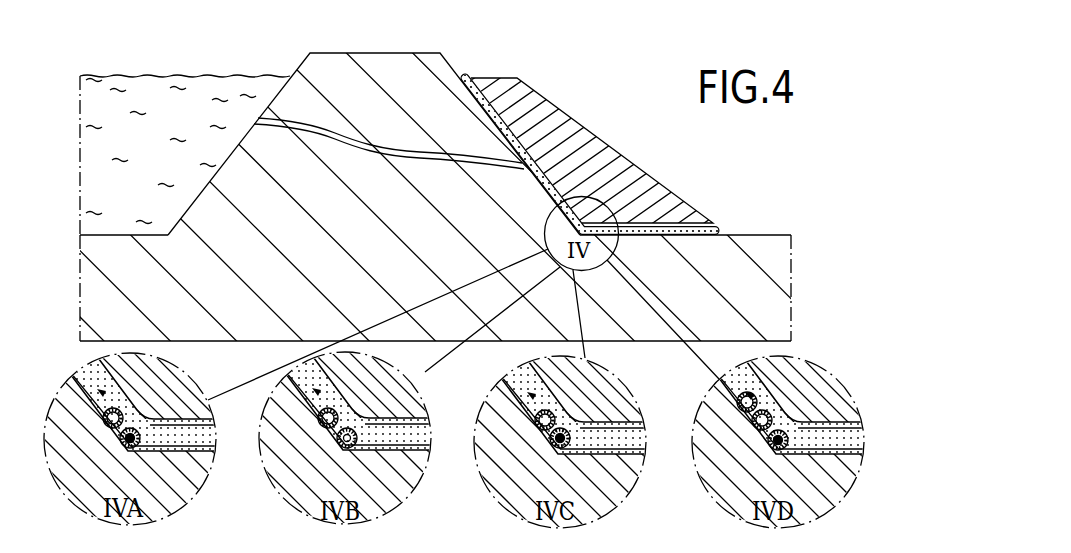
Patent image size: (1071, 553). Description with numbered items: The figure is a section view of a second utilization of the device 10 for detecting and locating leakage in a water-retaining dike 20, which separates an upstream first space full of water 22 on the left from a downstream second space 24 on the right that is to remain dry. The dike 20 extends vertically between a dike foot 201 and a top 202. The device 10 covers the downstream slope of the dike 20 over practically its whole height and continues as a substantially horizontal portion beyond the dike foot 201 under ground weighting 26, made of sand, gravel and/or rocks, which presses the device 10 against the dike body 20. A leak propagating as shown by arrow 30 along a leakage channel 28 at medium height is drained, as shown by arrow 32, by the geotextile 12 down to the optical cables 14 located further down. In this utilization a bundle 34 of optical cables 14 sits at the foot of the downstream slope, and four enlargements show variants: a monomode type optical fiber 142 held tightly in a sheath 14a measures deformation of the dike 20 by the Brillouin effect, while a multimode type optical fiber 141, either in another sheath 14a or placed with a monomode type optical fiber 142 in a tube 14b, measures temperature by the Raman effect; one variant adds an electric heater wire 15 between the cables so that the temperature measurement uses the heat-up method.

The device for detecting and locating leakage 10 is at (463, 73).
The geotextile 12 is at (490, 112).
The optical cable 14 is at (131, 396).
The sheath 14a is at (72, 386).
The tube 14b is at (366, 452).
The electric heater wire 15 is at (695, 464).
The dike 20 is at (358, 85).
The first space full of water 22 is at (148, 92).
The second space 24 is at (726, 165).
The ground weighting 26 is at (596, 136).
The leakage channel 28 is at (334, 143).
The arrow indicating leak propagation 30 is at (378, 147).
The arrow indicating drainage 32 is at (518, 170).
The bundle of optical cables 34 is at (562, 231).
The multimode type optical fiber 141 is at (120, 450).
The monomode type optical fiber 142 is at (108, 422).
The dike foot 201 is at (301, 288).
The top 202 is at (316, 53).